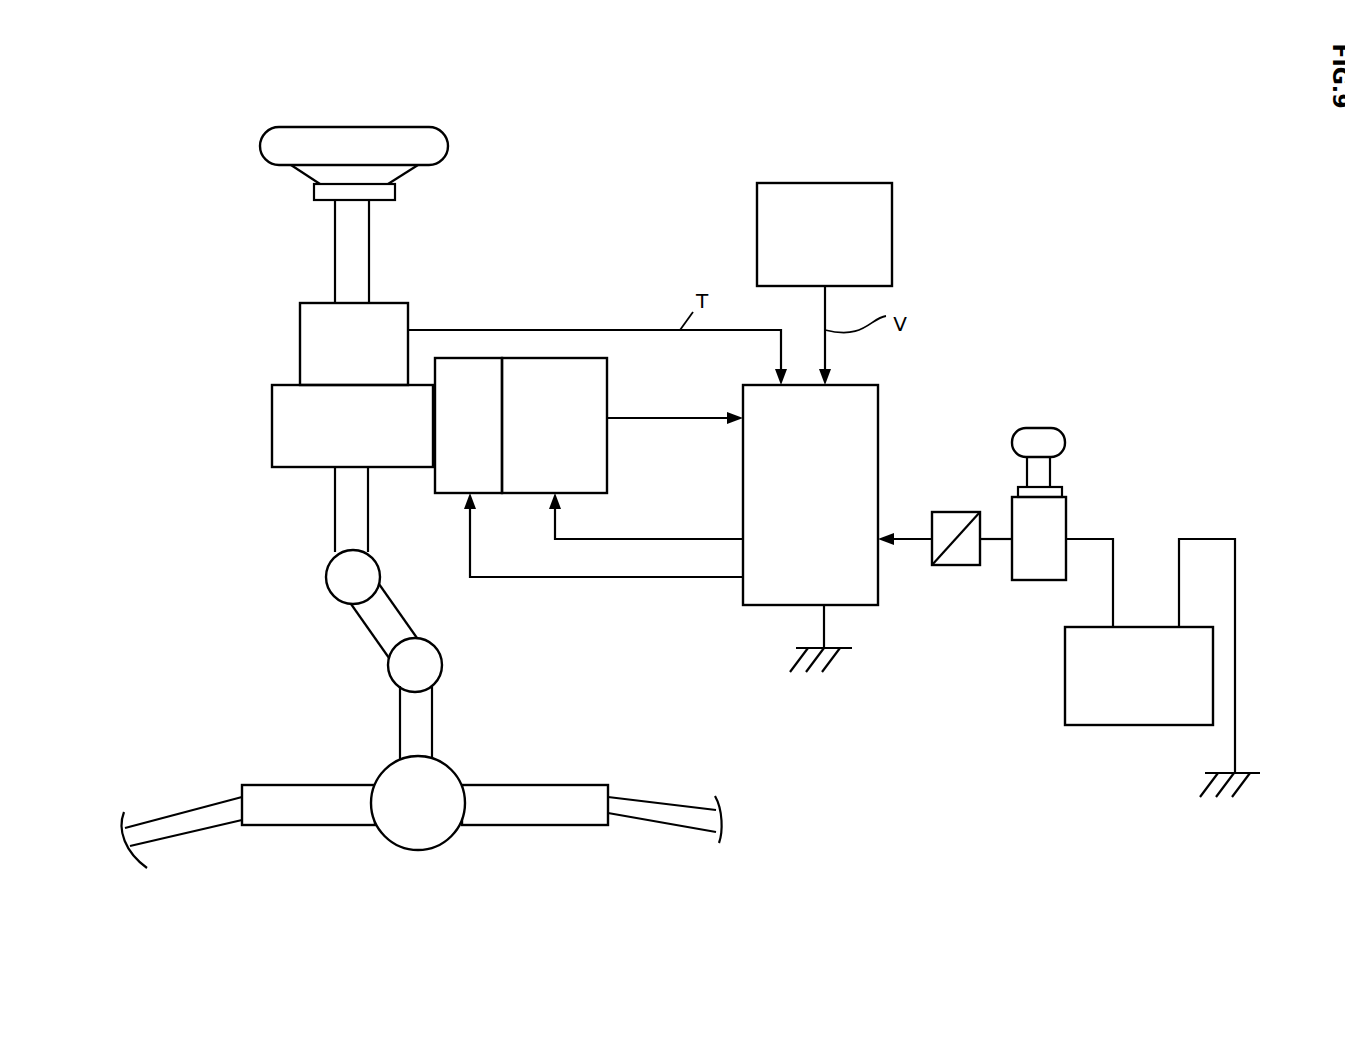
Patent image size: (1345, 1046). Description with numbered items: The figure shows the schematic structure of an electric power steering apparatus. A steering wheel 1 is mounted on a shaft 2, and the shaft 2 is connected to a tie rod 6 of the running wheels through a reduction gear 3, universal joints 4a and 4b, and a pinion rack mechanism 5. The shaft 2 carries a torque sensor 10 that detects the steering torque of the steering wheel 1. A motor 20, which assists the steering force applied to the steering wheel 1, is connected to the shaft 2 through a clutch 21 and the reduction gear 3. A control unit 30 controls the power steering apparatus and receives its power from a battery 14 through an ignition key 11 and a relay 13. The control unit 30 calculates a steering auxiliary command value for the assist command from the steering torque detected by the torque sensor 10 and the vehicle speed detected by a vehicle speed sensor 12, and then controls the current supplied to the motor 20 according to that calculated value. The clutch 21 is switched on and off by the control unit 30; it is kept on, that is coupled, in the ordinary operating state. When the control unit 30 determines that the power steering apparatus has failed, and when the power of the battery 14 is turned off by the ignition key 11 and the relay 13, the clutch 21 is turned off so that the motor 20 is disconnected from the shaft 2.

The steering wheel 1 is at (440, 147).
The shaft 2 is at (340, 252).
The reduction gear 3 is at (272, 443).
The universal joint 4a is at (327, 582).
The universal joint 4b is at (390, 676).
The pinion rack mechanism 5 is at (462, 768).
The tie rod 6 is at (663, 815).
The torque sensor 10 is at (300, 348).
The ignition key 11 is at (1065, 443).
The vehicle speed sensor 12 is at (892, 222).
The relay 13 is at (960, 565).
The battery 14 is at (1108, 720).
The motor 20 is at (560, 358).
The clutch 21 is at (480, 358).
The control unit 30 is at (878, 413).